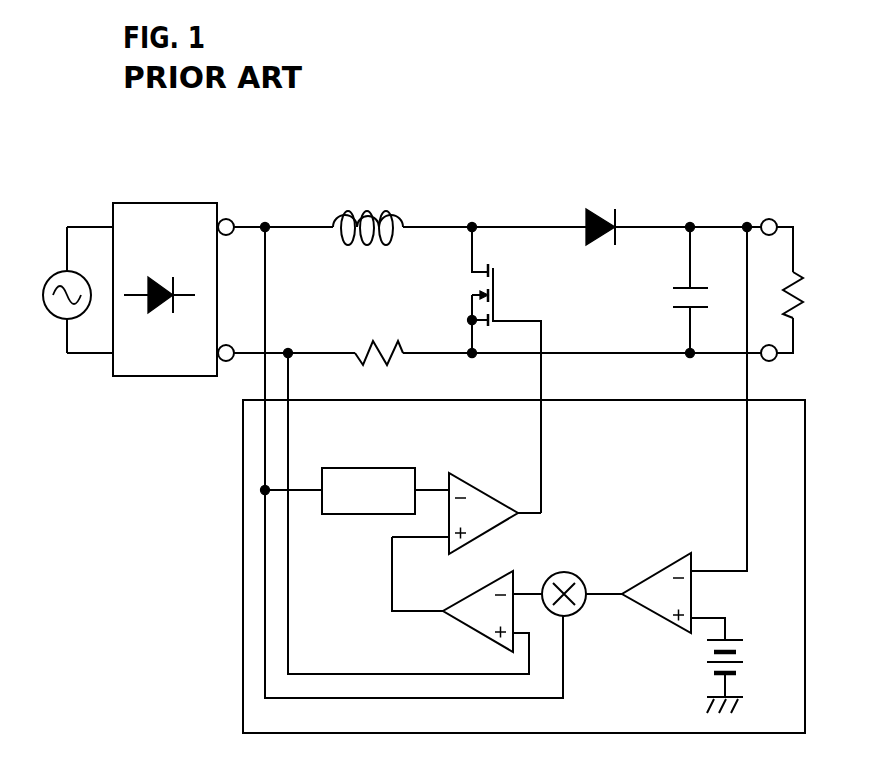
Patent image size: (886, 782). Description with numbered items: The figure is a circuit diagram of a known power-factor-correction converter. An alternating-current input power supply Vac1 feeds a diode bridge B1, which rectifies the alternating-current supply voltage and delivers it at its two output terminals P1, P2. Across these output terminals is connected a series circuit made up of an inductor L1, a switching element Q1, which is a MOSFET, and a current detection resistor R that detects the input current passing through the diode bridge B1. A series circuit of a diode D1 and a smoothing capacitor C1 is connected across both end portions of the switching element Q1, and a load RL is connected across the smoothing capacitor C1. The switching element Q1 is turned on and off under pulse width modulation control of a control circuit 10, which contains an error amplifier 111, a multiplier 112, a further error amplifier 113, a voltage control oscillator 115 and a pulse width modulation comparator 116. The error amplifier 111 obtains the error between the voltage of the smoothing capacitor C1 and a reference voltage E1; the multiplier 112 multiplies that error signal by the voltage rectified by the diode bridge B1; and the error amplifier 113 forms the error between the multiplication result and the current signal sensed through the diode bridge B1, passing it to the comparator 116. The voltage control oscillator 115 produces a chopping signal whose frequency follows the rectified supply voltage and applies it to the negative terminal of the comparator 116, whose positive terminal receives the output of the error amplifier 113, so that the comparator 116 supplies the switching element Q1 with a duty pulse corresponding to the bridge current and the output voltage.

The control circuit 10 is at (494, 480).
The error amplifier 111 is at (651, 618).
The multiplier 112 is at (564, 572).
The error amplifier 113 is at (463, 629).
The voltage control oscillator (VCO) 115 is at (366, 468).
The pulse width modulation (PWM) comparator 116 is at (476, 482).
The diode bridge B1 is at (186, 203).
The alternating-current input power supply Vac1 is at (59, 290).
The first input terminal P1 is at (233, 213).
The second input terminal P2 is at (233, 341).
The inductor L1 is at (368, 213).
The diode D1 is at (601, 214).
The switching element Q1 is at (487, 370).
The current detection resistor R is at (379, 341).
The smoothing capacitor C1 is at (674, 290).
The load RL is at (806, 290).
The reference voltage E1 is at (739, 676).